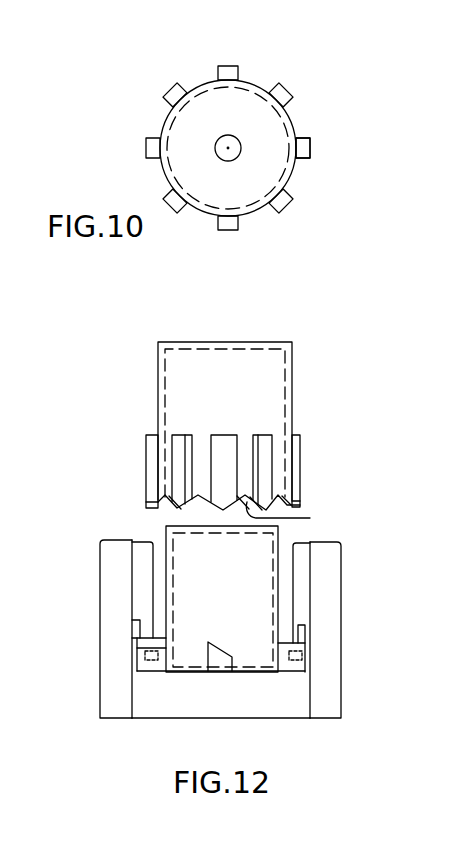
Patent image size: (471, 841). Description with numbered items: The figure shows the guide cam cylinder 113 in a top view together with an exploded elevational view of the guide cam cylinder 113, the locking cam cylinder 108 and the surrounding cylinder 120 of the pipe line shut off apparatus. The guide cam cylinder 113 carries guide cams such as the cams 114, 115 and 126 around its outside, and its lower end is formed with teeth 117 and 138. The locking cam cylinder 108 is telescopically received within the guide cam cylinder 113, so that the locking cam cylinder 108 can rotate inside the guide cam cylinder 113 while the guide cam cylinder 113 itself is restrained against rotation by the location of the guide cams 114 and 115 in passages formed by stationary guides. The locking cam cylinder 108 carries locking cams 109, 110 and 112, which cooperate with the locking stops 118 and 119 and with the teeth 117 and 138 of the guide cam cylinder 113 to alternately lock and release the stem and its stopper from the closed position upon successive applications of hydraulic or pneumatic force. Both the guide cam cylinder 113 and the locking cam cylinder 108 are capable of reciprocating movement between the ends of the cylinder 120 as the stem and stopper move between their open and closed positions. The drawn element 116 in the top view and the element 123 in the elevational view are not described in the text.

In FIG. 10, the guide cam cylinder 113 is at (278, 132).
In FIG. 12, the guide cam cylinder 113 is at (293, 402).
In FIG. 10, the guide cam 114 is at (310, 148).
In FIG. 12, the guide cam 114 is at (303, 470).
In FIG. 10, the guide cam 115 is at (287, 202).
In FIG. 12, the guide cam 115 is at (277, 508).
In FIG. 10, the radial tab 116 is at (283, 93).
In FIG. 12, the guide cam 126 is at (147, 470).
In FIG. 12, the tooth 138 is at (290, 497).
In FIG. 12, the tooth 117 is at (310, 518).
In FIG. 12, the locking cam cylinder 108 is at (283, 608).
In FIG. 12, the locking stop 118 is at (303, 630).
In FIG. 12, the locking stop 119 is at (133, 630).
In FIG. 12, the locking cam 112 is at (137, 666).
In FIG. 12, the locking cam 109 is at (308, 650).
In FIG. 12, the locking cam 110 is at (223, 663).
In FIG. 12, the cylinder 120 is at (110, 697).
In FIG. 12, the base 123 is at (287, 705).